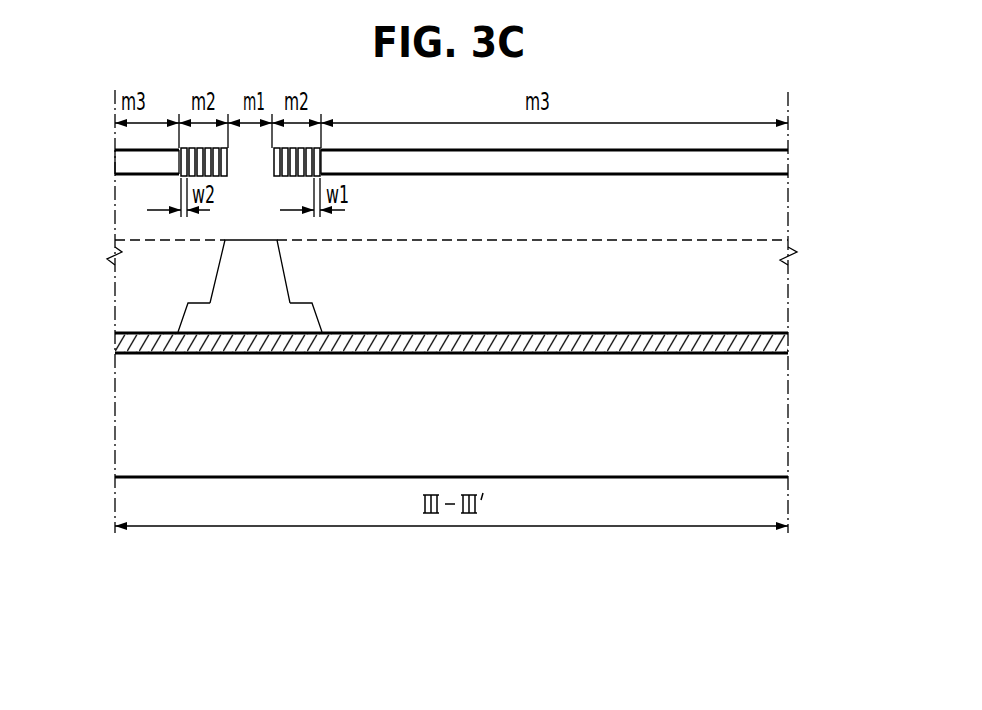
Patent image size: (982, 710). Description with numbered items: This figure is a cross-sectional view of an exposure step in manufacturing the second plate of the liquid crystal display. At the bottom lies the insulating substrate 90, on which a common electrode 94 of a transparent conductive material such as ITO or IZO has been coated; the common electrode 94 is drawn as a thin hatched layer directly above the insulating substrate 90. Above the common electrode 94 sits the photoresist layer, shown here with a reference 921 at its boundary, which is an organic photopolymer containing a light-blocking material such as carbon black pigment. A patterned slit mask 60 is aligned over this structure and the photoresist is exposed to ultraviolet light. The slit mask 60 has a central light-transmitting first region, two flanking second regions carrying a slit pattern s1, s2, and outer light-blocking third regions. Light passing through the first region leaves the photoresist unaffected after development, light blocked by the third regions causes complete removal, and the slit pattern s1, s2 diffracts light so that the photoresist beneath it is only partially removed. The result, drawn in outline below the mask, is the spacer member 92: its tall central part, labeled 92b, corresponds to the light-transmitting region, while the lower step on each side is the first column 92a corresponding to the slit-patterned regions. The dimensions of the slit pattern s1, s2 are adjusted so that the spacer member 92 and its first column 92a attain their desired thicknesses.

The slit mask 60 is at (464, 164).
The slit pattern s1 is at (181, 160).
The slit pattern s2 is at (189, 148).
The organic layer 921 is at (779, 288).
The spacer member 92 is at (169, 303).
The first column 92a is at (192, 310).
The upper spacer portion 92b is at (224, 264).
The common electrode 94 is at (779, 341).
The insulating substrate 90 is at (779, 441).